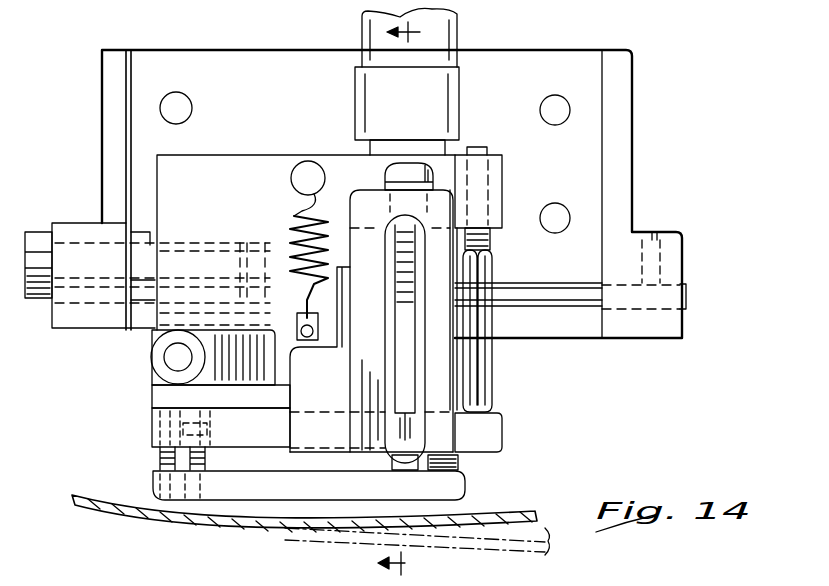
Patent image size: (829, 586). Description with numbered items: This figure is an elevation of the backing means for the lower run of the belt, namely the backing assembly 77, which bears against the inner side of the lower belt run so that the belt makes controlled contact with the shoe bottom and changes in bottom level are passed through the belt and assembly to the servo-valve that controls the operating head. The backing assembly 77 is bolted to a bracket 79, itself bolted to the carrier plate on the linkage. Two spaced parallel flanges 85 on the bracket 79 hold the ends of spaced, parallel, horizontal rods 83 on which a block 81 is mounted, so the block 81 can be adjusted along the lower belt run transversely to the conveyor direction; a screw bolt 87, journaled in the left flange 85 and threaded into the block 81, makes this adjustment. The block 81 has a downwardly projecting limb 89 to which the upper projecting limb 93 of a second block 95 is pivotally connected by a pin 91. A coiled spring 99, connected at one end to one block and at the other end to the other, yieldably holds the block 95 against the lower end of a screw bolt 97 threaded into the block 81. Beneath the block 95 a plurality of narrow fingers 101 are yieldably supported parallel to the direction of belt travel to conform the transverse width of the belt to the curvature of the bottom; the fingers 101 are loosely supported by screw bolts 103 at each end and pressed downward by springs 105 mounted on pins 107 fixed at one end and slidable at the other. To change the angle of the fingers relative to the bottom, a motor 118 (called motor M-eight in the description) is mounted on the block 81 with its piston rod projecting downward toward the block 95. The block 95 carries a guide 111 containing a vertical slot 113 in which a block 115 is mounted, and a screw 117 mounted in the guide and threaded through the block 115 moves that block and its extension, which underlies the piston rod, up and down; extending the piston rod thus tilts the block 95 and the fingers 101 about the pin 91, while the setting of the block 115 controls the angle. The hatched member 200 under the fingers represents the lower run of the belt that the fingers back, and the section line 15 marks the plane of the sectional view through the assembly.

The section line 15 is at (416, 301).
The backing assembly 77 is at (74, 365).
The bracket 79 is at (522, 51).
The block 81 is at (254, 156).
The rods 83 is at (575, 293).
The flanges 85 is at (115, 105).
The screw bolt 87 is at (40, 226).
The limb 89 is at (275, 367).
The pin 91 is at (160, 360).
The limb 93 is at (162, 394).
The second block 95 is at (487, 438).
The screw bolt 97 is at (487, 381).
The coiled spring 99 is at (292, 210).
The fingers 101 is at (222, 490).
The screw bolts 103 is at (238, 440).
The springs 105 is at (160, 450).
The pins 107 is at (160, 462).
The guide 111 is at (443, 397).
The vertical slot 113 is at (390, 396).
The block 115 is at (408, 346).
The screw 117 is at (415, 222).
The shaft 118 is at (452, 42).
The workpiece plate 200 is at (114, 514).